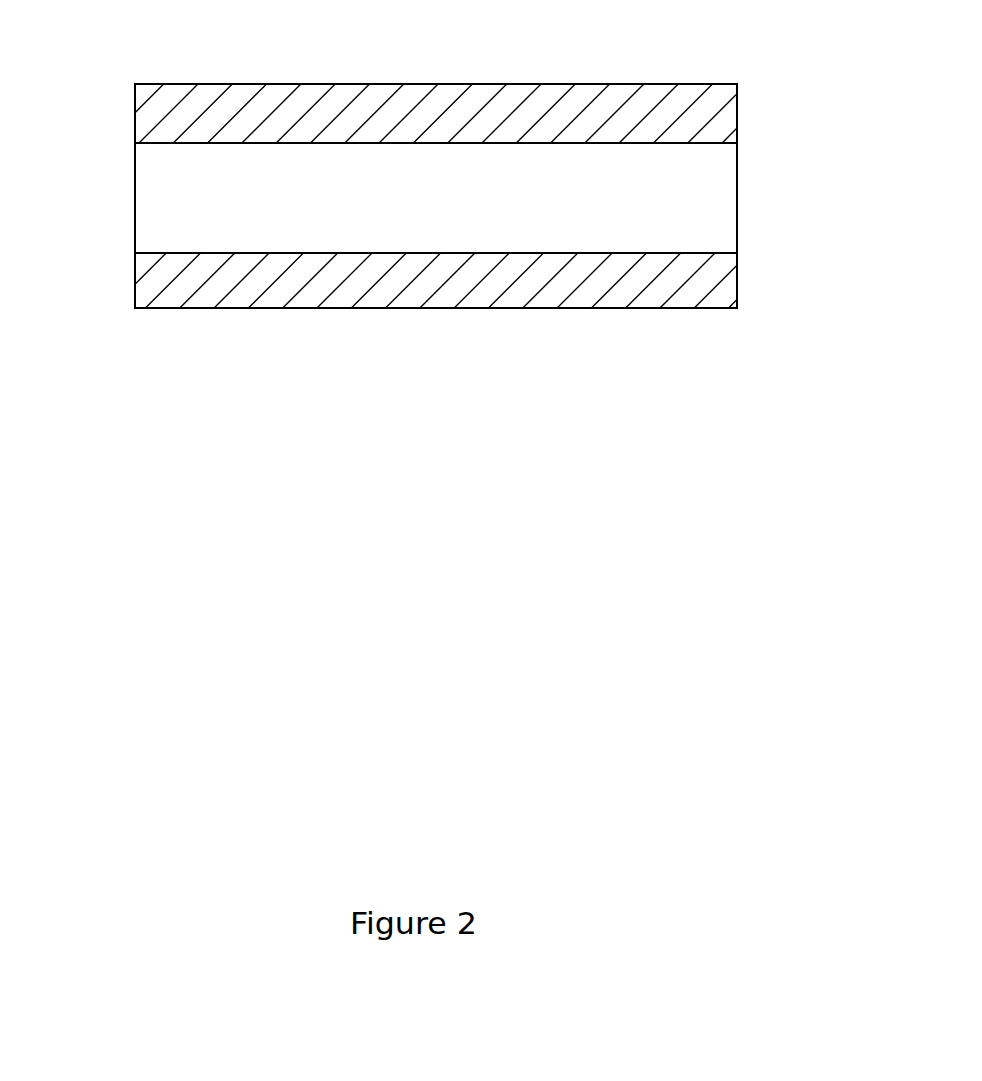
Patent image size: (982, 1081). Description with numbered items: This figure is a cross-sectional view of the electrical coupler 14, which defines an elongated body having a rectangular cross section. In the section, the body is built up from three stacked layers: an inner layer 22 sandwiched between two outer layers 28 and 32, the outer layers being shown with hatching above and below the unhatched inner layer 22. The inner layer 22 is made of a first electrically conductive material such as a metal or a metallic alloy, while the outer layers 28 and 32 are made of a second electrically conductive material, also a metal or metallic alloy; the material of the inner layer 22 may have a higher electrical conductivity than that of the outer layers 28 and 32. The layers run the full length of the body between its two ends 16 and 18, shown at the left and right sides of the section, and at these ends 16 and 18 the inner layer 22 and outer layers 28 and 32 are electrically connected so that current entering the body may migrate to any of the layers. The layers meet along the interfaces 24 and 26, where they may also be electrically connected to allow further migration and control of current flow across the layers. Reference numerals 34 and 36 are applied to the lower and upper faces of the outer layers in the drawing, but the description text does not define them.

The electrical coupler 14 is at (313, 83).
The end 16 is at (134, 205).
The end 18 is at (738, 198).
The inner layer 22 is at (515, 180).
The interface 24 is at (391, 253).
The interface 26 is at (402, 143).
The outer layer 28 is at (656, 292).
The outer layer 32 is at (722, 92).
The bottom surface 34 is at (235, 310).
The top surface 36 is at (623, 84).